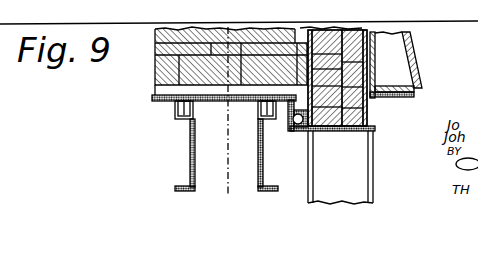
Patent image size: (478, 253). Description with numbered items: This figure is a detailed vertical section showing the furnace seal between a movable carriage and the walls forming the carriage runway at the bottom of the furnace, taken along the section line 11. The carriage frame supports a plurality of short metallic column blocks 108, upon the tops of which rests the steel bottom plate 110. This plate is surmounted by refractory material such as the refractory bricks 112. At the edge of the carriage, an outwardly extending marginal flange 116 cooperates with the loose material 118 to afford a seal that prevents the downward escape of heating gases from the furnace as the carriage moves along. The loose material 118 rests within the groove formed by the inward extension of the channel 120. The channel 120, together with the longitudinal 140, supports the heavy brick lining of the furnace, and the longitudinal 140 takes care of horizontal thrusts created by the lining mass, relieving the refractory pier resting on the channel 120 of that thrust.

The section line 11- 11 is at (258, 24).
The column block 108 is at (258, 111).
The bottom plate 110 is at (152, 98).
The refractory bricks 112 is at (155, 70).
The marginal flange 116 is at (288, 108).
The loose material 118 is at (304, 132).
The channel 120 is at (356, 133).
The longitudinal 140 is at (393, 72).